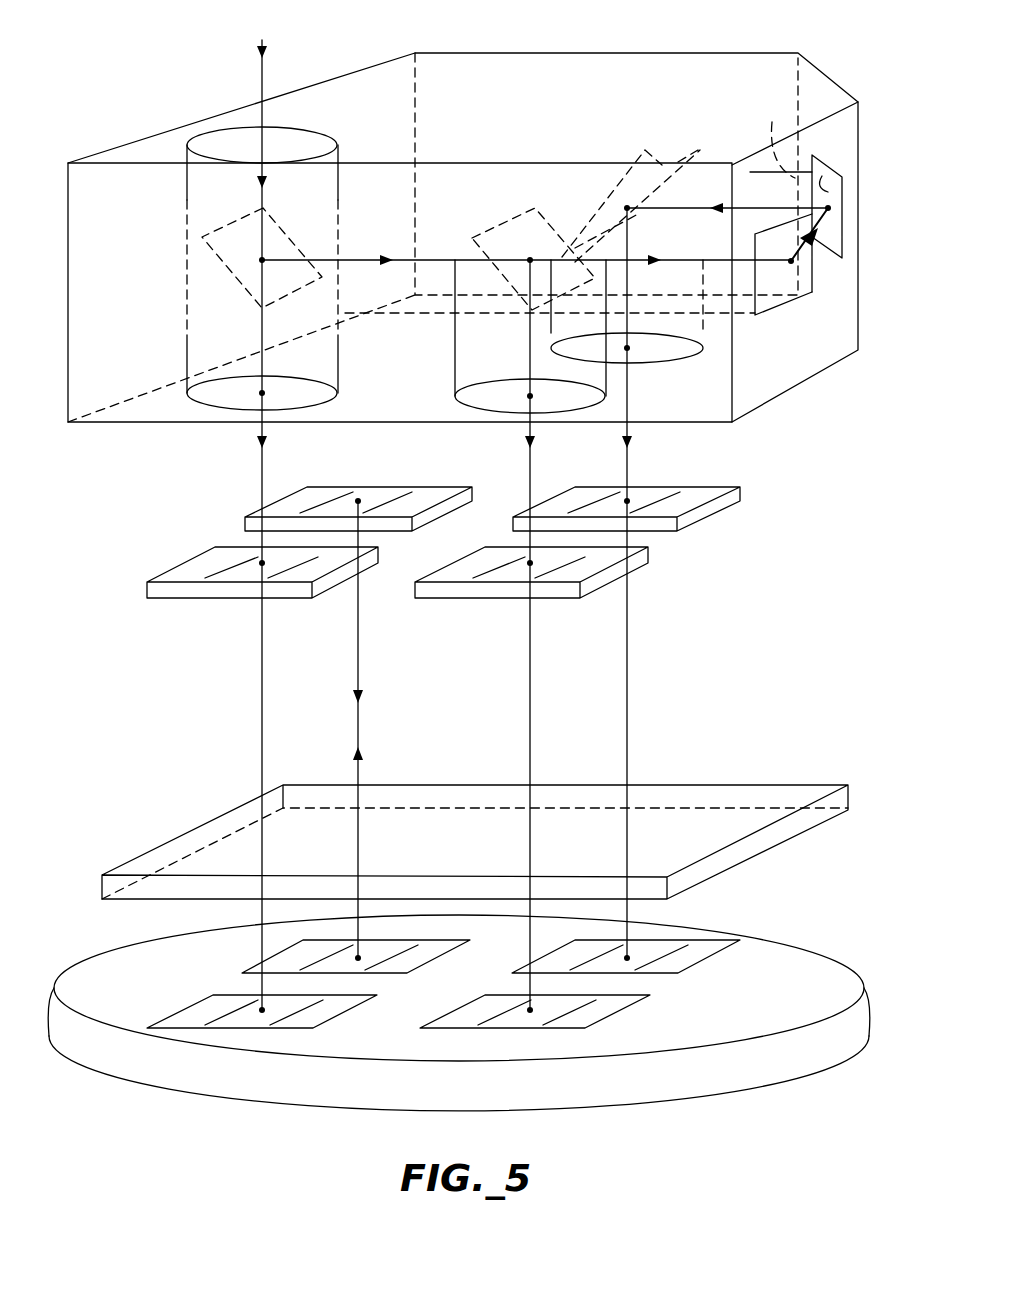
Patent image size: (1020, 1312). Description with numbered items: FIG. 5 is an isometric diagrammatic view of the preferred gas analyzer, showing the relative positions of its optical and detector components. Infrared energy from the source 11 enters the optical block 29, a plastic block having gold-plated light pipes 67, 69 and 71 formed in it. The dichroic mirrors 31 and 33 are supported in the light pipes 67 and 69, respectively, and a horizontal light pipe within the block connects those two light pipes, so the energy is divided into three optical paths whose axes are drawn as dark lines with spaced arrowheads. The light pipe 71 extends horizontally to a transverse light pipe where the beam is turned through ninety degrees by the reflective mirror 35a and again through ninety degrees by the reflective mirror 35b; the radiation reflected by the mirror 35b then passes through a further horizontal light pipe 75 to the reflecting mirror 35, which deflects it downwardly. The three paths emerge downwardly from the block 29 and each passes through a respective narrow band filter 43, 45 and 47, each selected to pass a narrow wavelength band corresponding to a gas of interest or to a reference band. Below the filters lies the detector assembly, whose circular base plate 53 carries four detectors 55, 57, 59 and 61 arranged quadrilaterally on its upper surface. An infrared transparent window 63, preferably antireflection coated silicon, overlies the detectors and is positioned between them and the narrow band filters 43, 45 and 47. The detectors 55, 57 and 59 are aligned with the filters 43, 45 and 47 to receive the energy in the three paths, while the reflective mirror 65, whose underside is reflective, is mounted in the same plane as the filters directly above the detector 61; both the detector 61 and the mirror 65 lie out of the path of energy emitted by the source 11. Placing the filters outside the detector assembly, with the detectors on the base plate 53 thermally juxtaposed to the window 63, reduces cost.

The source 11 is at (280, 46).
The optical block 29 is at (690, 55).
The dichroic mirror 31 is at (290, 233).
The dichroic mirror 33 is at (500, 222).
The reflecting mirror 35 is at (640, 150).
The reflective mirror 35a is at (770, 291).
The reflective mirror 35b is at (818, 175).
The narrow band filter 43 is at (175, 568).
The narrow band filter 45 is at (598, 556).
The narrow band filter 47 is at (718, 487).
The base plate 53 is at (675, 1088).
The detector 55 is at (207, 1008).
The detector 57 is at (470, 1008).
The detector 59 is at (710, 948).
The detector 61 is at (440, 948).
The infrared transparent window 63 is at (770, 845).
The reflective mirror 65 is at (325, 485).
The light pipe 67 is at (188, 224).
The light pipe 69 is at (455, 352).
The light pipe 71 is at (705, 343).
The horizontal light pipe 75 is at (777, 139).